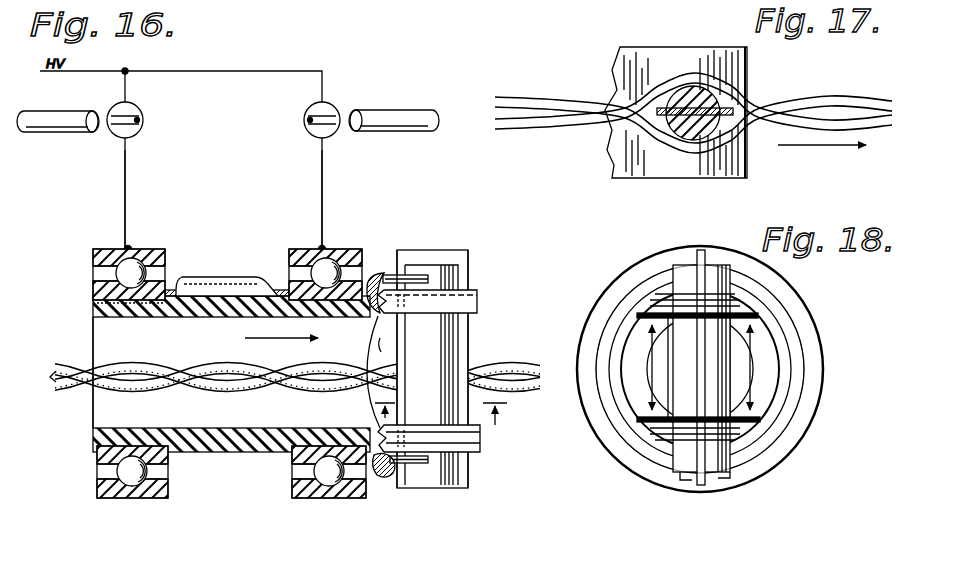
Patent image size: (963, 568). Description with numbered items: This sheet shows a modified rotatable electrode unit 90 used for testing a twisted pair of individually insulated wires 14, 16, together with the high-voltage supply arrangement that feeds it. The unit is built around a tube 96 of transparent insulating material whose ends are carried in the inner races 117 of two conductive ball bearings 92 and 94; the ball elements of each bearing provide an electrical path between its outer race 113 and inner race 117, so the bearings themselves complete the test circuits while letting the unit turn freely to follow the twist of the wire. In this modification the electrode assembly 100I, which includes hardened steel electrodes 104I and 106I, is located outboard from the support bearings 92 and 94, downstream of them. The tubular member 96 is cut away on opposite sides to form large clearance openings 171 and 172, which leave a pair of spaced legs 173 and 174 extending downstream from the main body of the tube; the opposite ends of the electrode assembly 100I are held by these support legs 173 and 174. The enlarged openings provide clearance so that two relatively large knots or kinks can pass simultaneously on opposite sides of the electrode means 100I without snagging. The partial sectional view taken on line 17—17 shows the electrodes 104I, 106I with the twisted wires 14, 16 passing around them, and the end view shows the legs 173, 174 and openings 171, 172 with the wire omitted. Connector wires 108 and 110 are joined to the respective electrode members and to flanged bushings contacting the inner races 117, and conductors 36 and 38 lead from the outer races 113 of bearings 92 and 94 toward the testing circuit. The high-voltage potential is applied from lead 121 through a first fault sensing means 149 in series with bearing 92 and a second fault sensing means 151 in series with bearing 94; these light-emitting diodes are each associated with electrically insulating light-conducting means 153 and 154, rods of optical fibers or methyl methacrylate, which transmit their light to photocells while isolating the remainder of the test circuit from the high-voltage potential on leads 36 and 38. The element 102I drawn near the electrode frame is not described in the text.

In FIG. 16, the individually insulated wire 14 is at (112, 357).
In FIG. 17, the individually insulated wire 14 is at (519, 96).
In FIG. 16, the individually insulated wire 16 is at (108, 396).
In FIG. 17, the individually insulated wire 16 is at (522, 133).
In FIG. 16, the section line 17— 17 is at (450, 406).
In FIG. 16, the conductor 36 is at (127, 183).
In FIG. 16, the conductor 38 is at (330, 190).
In FIG. 16, the rotatable electrode unit 90 is at (411, 217).
In FIG. 18, the rotatable electrode unit 90 is at (820, 434).
In FIG. 16, the bearing 92 is at (98, 237).
In FIG. 16, the bearing 94 is at (302, 229).
In FIG. 18, the bearing 94 is at (808, 296).
In FIG. 16, the tube 96 is at (212, 452).
In FIG. 18, the tube 96 is at (635, 346).
In FIG. 16, the electrode assembly 100I is at (467, 234).
In FIG. 18, the electrode assembly 100I is at (712, 252).
In FIG. 16, the guide frame 102I is at (462, 257).
In FIG. 17, the guide frame 102I is at (618, 78).
In FIG. 18, the guide frame 102I is at (712, 474).
In FIG. 17, the hardened steel electrode 104I is at (720, 82).
In FIG. 18, the hardened steel electrode 104I is at (690, 470).
In FIG. 17, the hardened steel electrode 106I is at (705, 155).
In FIG. 18, the hardened steel electrode 106I is at (718, 474).
In FIG. 16, the connector wire 108 is at (216, 290).
In FIG. 16, the connector wire 110 is at (378, 478).
In FIG. 18, the outer race 113 is at (803, 332).
In FIG. 18, the inner race 117 is at (782, 357).
In FIG. 16, the lead 121 is at (97, 67).
In FIG. 16, the first fault sensing means 149 is at (140, 108).
In FIG. 16, the second fault sensing means 151 is at (307, 117).
In FIG. 16, the electrically insulating light-conducting means 153 is at (53, 132).
In FIG. 16, the electrically insulating light-conducting means 154 is at (385, 113).
In FIG. 16, the clearance opening 171 is at (357, 348).
In FIG. 18, the clearance opening 171 is at (753, 378).
In FIG. 18, the clearance opening 172 is at (647, 374).
In FIG. 16, the support leg 173 is at (477, 300).
In FIG. 17, the support leg 173 is at (665, 65).
In FIG. 18, the support leg 173 is at (665, 302).
In FIG. 16, the support leg 174 is at (483, 442).
In FIG. 18, the support leg 174 is at (662, 436).